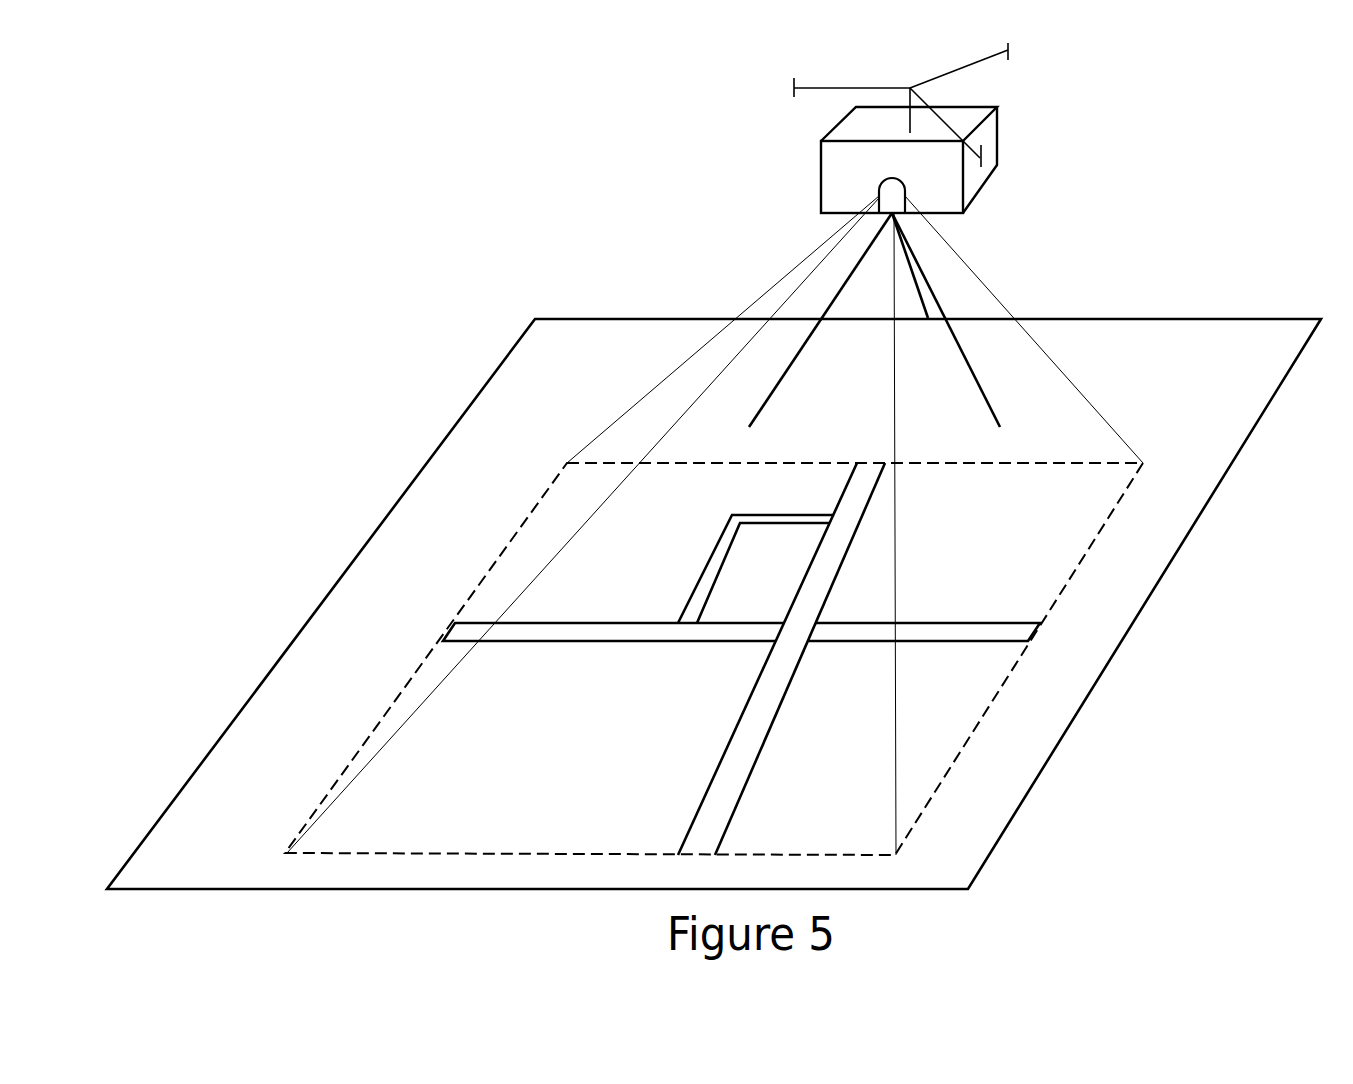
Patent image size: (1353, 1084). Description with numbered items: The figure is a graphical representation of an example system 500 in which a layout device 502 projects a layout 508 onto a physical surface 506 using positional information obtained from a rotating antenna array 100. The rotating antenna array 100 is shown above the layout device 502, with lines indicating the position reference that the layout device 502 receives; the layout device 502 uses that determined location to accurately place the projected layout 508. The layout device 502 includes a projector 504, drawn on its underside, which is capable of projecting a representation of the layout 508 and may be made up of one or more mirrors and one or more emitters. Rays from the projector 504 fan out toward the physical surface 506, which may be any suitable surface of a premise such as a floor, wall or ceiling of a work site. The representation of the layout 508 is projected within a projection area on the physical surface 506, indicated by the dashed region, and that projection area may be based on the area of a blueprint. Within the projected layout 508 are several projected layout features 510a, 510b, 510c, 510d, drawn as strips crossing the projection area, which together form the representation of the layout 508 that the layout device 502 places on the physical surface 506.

The imaging system 500 is at (134, 113).
The rotating antenna array 100 is at (715, 449).
The layout device 502 is at (998, 140).
The projector 504 is at (888, 204).
The physical surface 506 is at (571, 319).
The layout 508 is at (251, 856).
The strip 510a is at (850, 545).
The strip 510b is at (823, 642).
The strip 510c is at (575, 642).
The strip 510d is at (705, 568).